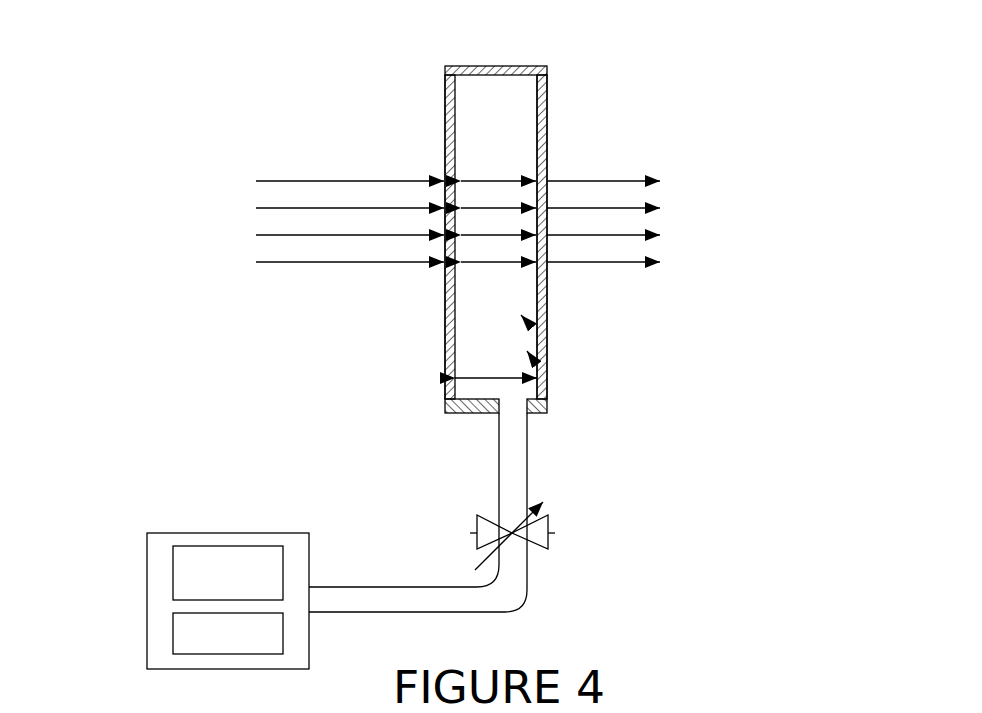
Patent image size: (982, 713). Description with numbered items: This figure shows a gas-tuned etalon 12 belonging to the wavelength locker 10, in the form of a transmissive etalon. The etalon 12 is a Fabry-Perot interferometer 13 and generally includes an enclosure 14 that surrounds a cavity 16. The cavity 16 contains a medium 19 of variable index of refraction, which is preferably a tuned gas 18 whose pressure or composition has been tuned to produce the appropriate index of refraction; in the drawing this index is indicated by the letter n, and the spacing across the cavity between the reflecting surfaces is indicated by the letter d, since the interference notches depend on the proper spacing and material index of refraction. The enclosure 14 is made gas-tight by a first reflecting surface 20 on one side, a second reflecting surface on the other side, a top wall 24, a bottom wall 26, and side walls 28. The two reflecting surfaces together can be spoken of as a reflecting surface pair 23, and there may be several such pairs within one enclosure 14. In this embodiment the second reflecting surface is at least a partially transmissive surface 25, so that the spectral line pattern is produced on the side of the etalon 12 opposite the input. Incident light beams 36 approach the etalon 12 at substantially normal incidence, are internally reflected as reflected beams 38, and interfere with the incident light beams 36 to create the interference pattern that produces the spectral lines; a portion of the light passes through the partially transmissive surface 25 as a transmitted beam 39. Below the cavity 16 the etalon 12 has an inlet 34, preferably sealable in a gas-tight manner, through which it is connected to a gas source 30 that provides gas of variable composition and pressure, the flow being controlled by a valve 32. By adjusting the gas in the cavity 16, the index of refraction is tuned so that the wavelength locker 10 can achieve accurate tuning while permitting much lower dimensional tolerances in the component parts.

The wavelength locker 10 is at (162, 135).
The gas-tuned etalon 12 is at (283, 172).
The Fabry-Perot interferometer 13 is at (226, 127).
The enclosure 14 is at (569, 90).
The cavity 16 is at (527, 141).
The tuned gas 18 is at (467, 149).
The medium of variable index of refraction 19 is at (470, 146).
The first reflecting surface 20 is at (445, 316).
The reflecting surface pair 23 is at (432, 368).
The top wall 24 is at (495, 66).
The partially transmissive surface 25 is at (563, 164).
The bottom wall 26 is at (478, 413).
The side walls 28 is at (540, 368).
The gas source 30 is at (203, 533).
The valve 32 is at (540, 535).
The inlet 34 is at (513, 400).
The incident light beams 36 is at (397, 263).
The reflected beams 38 is at (487, 180).
The transmitted beam 39 is at (600, 263).
The refractive index n is at (533, 325).
The cell path length d is at (508, 377).